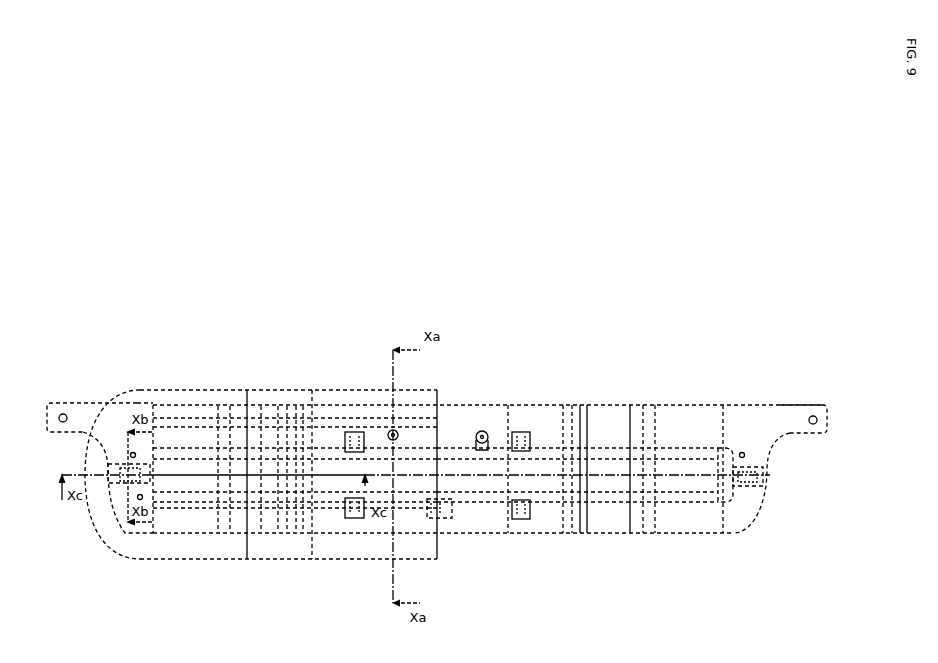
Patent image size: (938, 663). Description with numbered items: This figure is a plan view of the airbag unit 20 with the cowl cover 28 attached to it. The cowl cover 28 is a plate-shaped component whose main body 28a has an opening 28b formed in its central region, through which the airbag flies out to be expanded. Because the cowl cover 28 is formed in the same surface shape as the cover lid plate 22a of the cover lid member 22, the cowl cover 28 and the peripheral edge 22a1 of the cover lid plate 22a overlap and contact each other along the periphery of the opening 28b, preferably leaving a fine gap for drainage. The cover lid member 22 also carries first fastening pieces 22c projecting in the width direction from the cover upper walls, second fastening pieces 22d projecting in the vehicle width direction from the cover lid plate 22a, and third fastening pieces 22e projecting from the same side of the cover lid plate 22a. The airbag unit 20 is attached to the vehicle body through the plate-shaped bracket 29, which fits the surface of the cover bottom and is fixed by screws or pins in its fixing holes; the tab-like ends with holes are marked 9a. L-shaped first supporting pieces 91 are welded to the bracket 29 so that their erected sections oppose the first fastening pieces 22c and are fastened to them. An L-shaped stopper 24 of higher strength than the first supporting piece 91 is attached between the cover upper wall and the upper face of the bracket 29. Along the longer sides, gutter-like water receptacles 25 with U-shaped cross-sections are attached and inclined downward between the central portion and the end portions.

The mounting tab with hole 9a is at (65, 415).
The airbag unit 20 is at (668, 444).
The cover lid member 22 is at (604, 448).
The cover lid plate 22a is at (452, 470).
The peripheral edge of the cover lid plate 22a1 is at (443, 458).
The first fastening piece 22c is at (347, 450).
The second fastening piece 22d is at (112, 474).
The third fastening piece 22e is at (395, 431).
The stopper 24 is at (443, 518).
The water receptacle 25 is at (194, 432).
The cowl cover 28 is at (220, 389).
The main body 28a is at (262, 404).
The opening 28b is at (279, 457).
The bracket 29 is at (592, 413).
The first supporting piece 91 is at (350, 433).